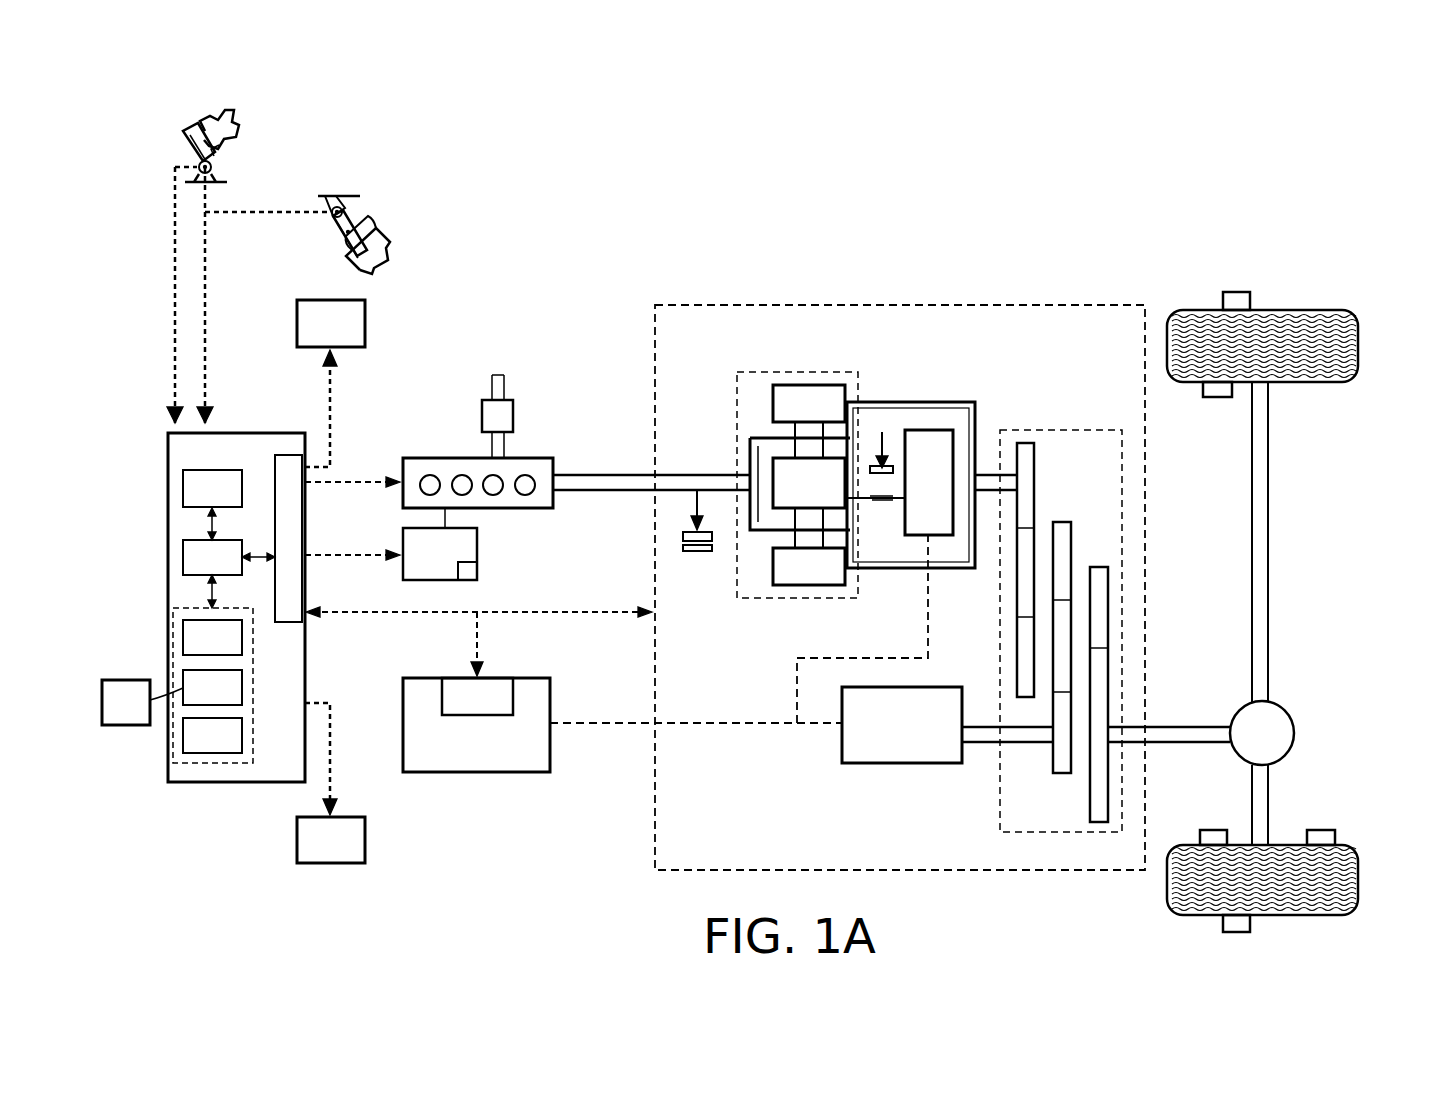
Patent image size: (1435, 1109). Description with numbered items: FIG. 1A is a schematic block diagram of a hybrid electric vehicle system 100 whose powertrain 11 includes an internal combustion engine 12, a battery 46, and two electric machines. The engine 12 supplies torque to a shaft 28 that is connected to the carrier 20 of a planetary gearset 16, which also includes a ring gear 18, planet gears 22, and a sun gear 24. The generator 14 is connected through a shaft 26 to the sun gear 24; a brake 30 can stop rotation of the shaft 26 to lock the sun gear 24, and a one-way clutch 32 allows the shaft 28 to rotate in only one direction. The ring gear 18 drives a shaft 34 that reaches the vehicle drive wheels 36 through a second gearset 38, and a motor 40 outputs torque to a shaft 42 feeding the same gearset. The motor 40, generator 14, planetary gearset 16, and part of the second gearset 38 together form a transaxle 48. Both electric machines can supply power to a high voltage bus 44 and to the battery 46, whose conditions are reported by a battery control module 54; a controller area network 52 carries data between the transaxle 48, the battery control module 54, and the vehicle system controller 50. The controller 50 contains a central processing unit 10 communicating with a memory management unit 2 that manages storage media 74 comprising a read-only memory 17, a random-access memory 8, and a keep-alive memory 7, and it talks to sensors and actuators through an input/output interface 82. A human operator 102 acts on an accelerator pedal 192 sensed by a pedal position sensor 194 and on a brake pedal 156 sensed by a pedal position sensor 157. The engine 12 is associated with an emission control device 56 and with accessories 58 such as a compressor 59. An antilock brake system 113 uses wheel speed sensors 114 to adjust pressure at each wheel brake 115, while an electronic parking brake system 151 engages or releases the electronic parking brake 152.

The vehicle system 100 is at (1355, 142).
The powertrain 11 is at (1127, 280).
The pedal 192 is at (183, 142).
The pedal position sensor 194 is at (213, 166).
The human operator 102 is at (218, 128).
The pedal position sensor 157 is at (322, 210).
The brake pedal 156 is at (358, 264).
The antilock brake system 113 is at (331, 383).
The vehicle system controller 50 is at (231, 433).
The input/output interface 82 is at (288, 455).
The central processing unit 10 is at (183, 488).
The memory management unit 2 is at (183, 560).
The random-access memory 8 is at (183, 637).
The read-only memory 17 is at (172, 697).
The keep-alive memory 7 is at (183, 735).
The computer-readable storage media 74 is at (205, 765).
The electronic parking brake system 151 is at (331, 783).
The emission control device 56 is at (482, 418).
The internal combustion engine 12 is at (526, 458).
The accessories 58 is at (403, 541).
The compressor 59 is at (478, 572).
The shaft 28 is at (580, 492).
The battery 46 is at (403, 734).
The battery control module 54 is at (500, 678).
The controller area network 52 is at (422, 618).
The high voltage bus 44 is at (740, 720).
The transaxle 48 is at (650, 352).
The planetary gearset 16 is at (828, 372).
The ring gear 18 is at (773, 395).
The planet gears 22 is at (788, 438).
The carrier 20 is at (750, 462).
The sun gear 24 is at (850, 505).
The shaft 26 is at (860, 495).
The one-way clutch 32 is at (683, 540).
The brake 30 is at (884, 458).
The generator 14 is at (930, 430).
The shaft 34 is at (985, 475).
The second gearset 38 is at (1065, 832).
The motor 40 is at (903, 765).
The shaft 42 is at (985, 727).
The vehicle drive wheels 36 is at (1300, 384).
The wheel speed sensors 114 is at (1235, 292).
The brake 115 is at (1208, 397).
The electronic parking brake 152 is at (1320, 830).